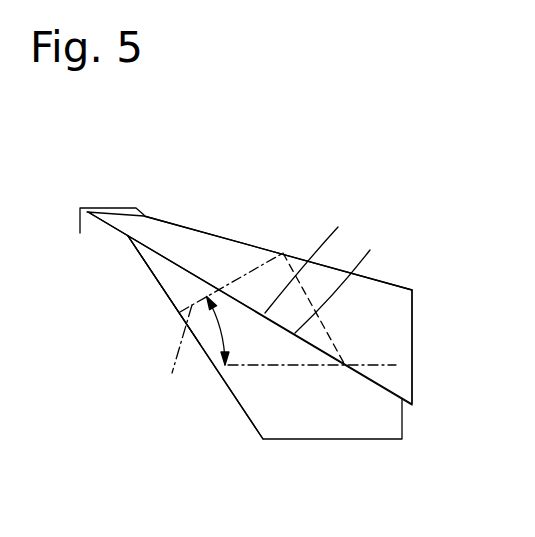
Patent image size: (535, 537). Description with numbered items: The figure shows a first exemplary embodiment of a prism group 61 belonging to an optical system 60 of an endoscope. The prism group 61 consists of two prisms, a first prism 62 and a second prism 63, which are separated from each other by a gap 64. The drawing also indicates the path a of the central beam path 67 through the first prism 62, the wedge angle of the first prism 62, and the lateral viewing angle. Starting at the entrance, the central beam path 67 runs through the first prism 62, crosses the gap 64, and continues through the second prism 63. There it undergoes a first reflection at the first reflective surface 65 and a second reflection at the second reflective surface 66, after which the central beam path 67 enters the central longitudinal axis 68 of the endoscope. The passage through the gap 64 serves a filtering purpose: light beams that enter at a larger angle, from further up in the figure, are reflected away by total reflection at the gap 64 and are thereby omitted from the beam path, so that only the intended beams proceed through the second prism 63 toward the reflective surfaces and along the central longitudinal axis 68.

The optical system 60 is at (289, 151).
The prism group 61 is at (305, 203).
The first prism 62 is at (180, 280).
The second prism 63 is at (198, 250).
The gap 64 is at (343, 277).
The first reflective surface 65 is at (400, 286).
The second reflective surface 66 is at (311, 252).
The central beam path 67 is at (248, 272).
The central longitudinal axis 68 is at (321, 365).
The path of the central beam path a is at (176, 352).